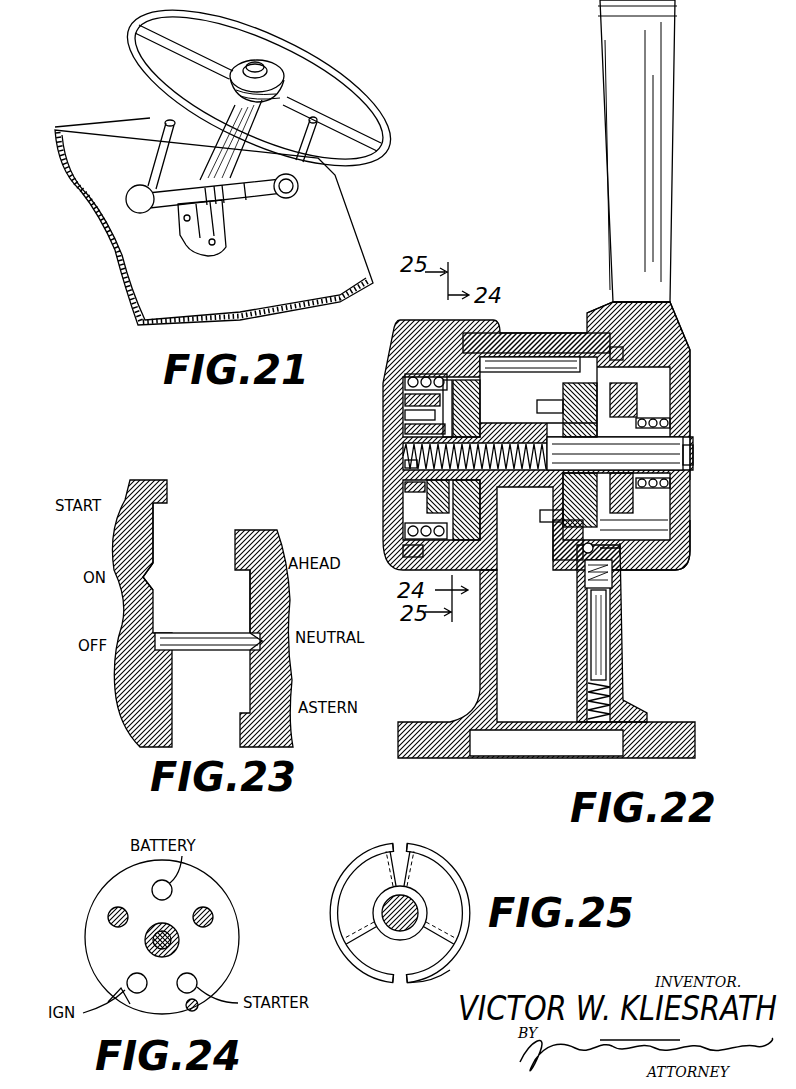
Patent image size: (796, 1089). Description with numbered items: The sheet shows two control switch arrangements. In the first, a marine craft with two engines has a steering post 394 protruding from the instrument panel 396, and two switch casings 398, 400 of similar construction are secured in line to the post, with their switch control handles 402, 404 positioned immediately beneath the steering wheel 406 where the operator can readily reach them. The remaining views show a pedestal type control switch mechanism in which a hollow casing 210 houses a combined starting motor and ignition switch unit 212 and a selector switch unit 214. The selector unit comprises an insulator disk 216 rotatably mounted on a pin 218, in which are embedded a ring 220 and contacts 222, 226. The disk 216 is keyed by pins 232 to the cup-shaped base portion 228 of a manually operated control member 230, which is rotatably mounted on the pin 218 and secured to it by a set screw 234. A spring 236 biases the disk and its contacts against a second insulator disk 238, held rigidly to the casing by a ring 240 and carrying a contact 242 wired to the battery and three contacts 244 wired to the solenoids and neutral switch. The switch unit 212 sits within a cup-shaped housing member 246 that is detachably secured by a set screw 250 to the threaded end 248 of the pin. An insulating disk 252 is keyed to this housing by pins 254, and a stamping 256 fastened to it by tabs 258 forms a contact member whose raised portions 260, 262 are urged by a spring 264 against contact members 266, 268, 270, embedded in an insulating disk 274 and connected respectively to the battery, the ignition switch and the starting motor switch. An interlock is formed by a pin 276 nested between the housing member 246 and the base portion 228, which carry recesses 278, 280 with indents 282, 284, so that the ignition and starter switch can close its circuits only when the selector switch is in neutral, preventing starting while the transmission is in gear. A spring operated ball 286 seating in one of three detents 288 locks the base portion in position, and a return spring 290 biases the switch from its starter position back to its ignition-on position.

In FIG. 22, the hollow pedestal type casing 210 is at (610, 643).
In FIG. 22, the combined starting motor and ignition switch unit 212 is at (383, 417).
In FIG. 22, the selector switch unit 214 is at (633, 393).
In FIG. 22, the insulator disk 216 is at (640, 567).
In FIG. 22, the pin 218 is at (663, 447).
In FIG. 22, the ring 220 is at (633, 507).
In FIG. 22, the contact 222 is at (692, 473).
In FIG. 22, the contact 226 is at (650, 347).
In FIG. 22, the cup-shaped base portion 228 is at (677, 553).
In FIG. 23, the cup-shaped base portion 228 is at (270, 727).
In FIG. 22, the manually operated control member 230 is at (652, 210).
In FIG. 22, the pins 232 is at (683, 420).
In FIG. 22, the set screw 234 is at (687, 452).
In FIG. 22, the spring 236 is at (637, 413).
In FIG. 22, the second insulator disk 238 is at (565, 507).
In FIG. 22, the ring 240 is at (573, 533).
In FIG. 22, the contact 242 is at (557, 520).
In FIG. 22, the contacts 244 is at (553, 372).
In FIG. 22, the cup-shaped housing member 246 is at (420, 515).
In FIG. 23, the cup-shaped housing member 246 is at (147, 703).
In FIG. 22, the threaded end 248 is at (415, 482).
In FIG. 22, the set screw 250 is at (400, 467).
In FIG. 22, the insulating disk 252 is at (420, 428).
In FIG. 25, the insulating disk 252 is at (463, 893).
In FIG. 22, the pins 254 is at (427, 403).
In FIG. 22, the stamping 256 is at (445, 372).
In FIG. 25, the stamping 256 is at (430, 960).
In FIG. 22, the tabs 258 is at (458, 385).
In FIG. 25, the tabs 258 is at (400, 846).
In FIG. 25, the raised portion 260 is at (360, 897).
In FIG. 25, the raised portion 262 is at (430, 880).
In FIG. 22, the spring 264 is at (445, 500).
In FIG. 22, the contact member 266 is at (410, 465).
In FIG. 24, the contact member 266 is at (157, 890).
In FIG. 22, the contact member 268 is at (498, 573).
In FIG. 24, the contact member 268 is at (130, 982).
In FIG. 24, the contact member 270 is at (188, 982).
In FIG. 22, the insulating disk 274 is at (455, 380).
In FIG. 22, the pin 276 is at (572, 366).
In FIG. 23, the pin 276 is at (193, 632).
In FIG. 23, the recess 278 is at (158, 537).
In FIG. 23, the recess 280 is at (250, 600).
In FIG. 23, the indent 282 is at (144, 580).
In FIG. 23, the indent 284 is at (257, 651).
In FIG. 22, the spring operated ball 286 is at (620, 600).
In FIG. 22, the detents 288 is at (573, 587).
In FIG. 22, the return spring 290 is at (415, 566).
In FIG. 21, the steering post 394 is at (226, 148).
In FIG. 21, the instrument panel 396 is at (140, 285).
In FIG. 21, the switch casing 398 is at (172, 198).
In FIG. 21, the switch casing 400 is at (246, 200).
In FIG. 21, the switch control handle 402 is at (158, 148).
In FIG. 21, the switch control handle 404 is at (300, 178).
In FIG. 21, the steering wheel 406 is at (292, 58).